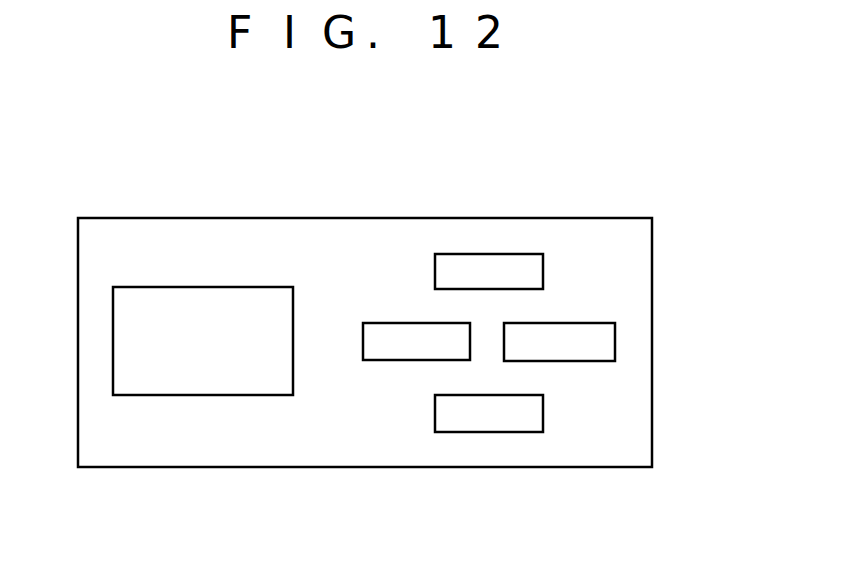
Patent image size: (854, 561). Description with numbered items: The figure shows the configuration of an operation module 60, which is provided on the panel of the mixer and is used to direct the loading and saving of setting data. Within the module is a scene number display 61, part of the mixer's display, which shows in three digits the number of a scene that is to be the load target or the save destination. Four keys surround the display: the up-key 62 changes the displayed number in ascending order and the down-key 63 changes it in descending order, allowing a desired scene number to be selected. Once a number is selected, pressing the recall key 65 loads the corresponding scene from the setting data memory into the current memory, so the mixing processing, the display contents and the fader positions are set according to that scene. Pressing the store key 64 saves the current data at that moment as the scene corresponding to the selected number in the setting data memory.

The operation module 60 is at (652, 253).
The scene number display 61 is at (235, 286).
The up-key 62 is at (498, 252).
The down-key 63 is at (482, 433).
The store key 64 is at (385, 322).
The recall key 65 is at (597, 322).